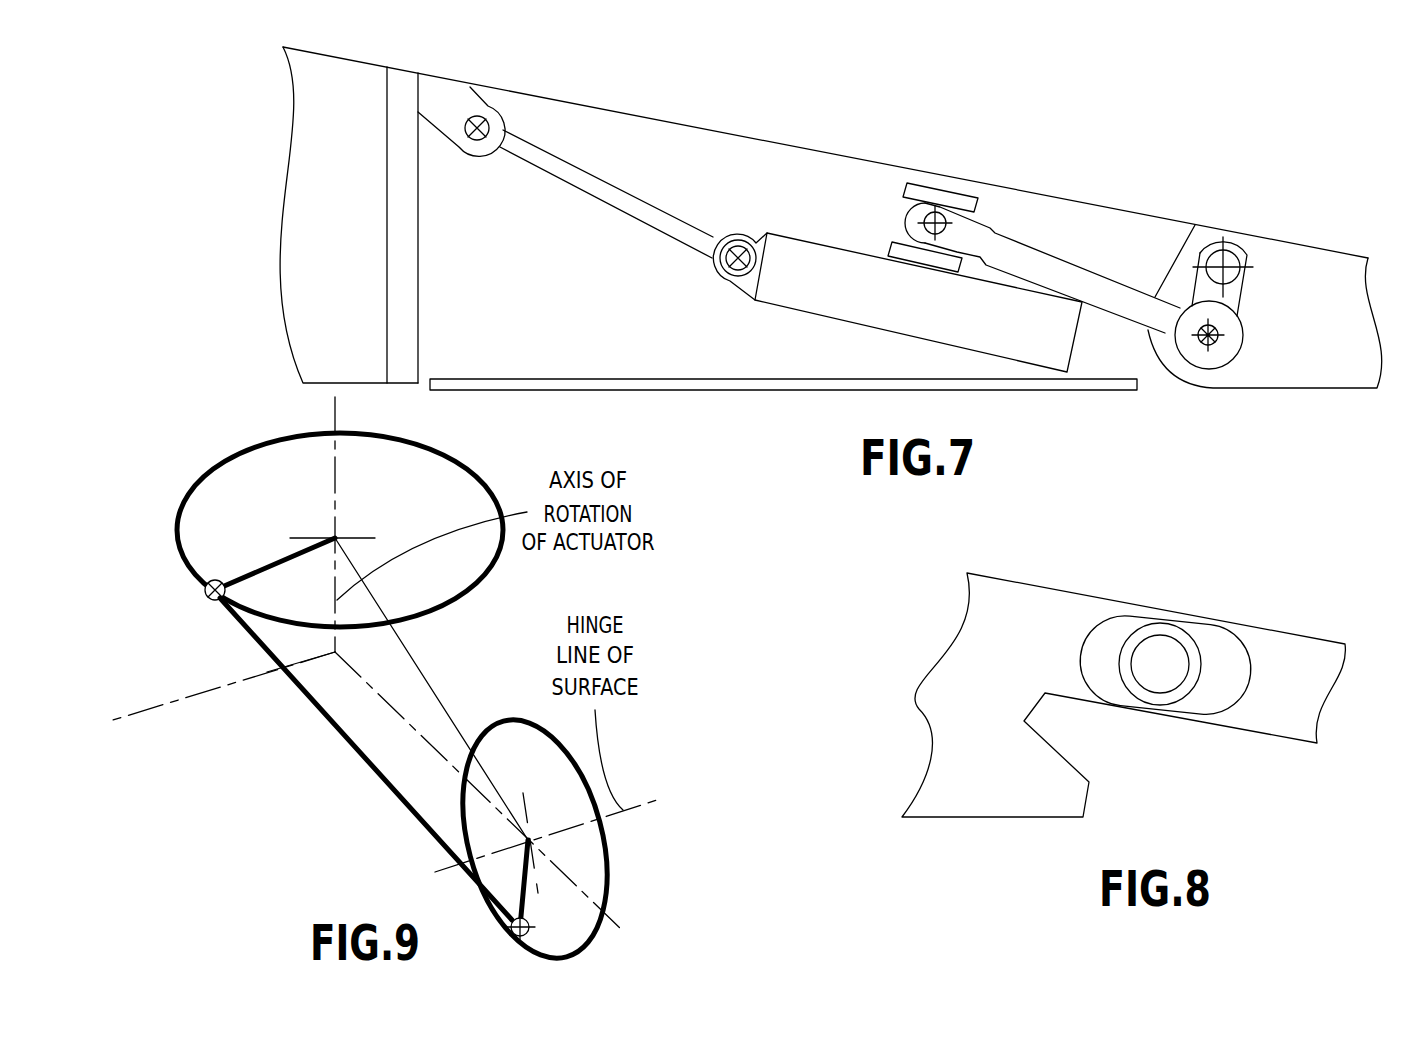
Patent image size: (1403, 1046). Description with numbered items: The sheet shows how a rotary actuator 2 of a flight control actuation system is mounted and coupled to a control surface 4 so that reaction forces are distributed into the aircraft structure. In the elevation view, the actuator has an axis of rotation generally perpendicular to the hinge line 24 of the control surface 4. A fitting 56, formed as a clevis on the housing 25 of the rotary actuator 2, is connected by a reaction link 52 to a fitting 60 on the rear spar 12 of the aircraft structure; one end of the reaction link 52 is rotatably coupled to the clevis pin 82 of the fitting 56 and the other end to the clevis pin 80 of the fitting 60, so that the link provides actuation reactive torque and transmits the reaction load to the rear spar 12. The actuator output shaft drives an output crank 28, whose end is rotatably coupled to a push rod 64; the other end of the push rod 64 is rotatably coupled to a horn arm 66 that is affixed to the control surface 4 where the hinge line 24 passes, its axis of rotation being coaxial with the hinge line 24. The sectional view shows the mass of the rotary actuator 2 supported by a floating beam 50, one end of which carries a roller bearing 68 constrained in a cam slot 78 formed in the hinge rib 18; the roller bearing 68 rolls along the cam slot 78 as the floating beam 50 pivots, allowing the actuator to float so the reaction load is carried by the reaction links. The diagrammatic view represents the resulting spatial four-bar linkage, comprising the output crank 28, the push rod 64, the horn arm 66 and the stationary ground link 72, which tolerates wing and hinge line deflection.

In FIG. 7, the rotary actuator 2 is at (890, 240).
In FIG. 7, the control surface 4 is at (1330, 246).
In FIG. 7, the rear spar 12 is at (387, 197).
In FIG. 8, the hinge rib 18 is at (1264, 638).
In FIG. 7, the hinge line 24 is at (1240, 257).
In FIG. 7, the housing 25 is at (797, 317).
In FIG. 7, the output crank 28 is at (947, 188).
In FIG. 9, the output crank 28 is at (258, 568).
In FIG. 8, the floating beam 50 is at (1148, 701).
In FIG. 7, the reaction link 52 is at (635, 197).
In FIG. 7, the fitting 56 is at (743, 232).
In FIG. 7, the fitting 60 is at (487, 100).
In FIG. 7, the push rod 64 is at (1123, 283).
In FIG. 9, the push rod 64 is at (365, 763).
In FIG. 7, the horn arm 66 is at (1247, 290).
In FIG. 9, the horn arm 66 is at (492, 901).
In FIG. 8, the roller bearing 68 is at (1199, 640).
In FIG. 9, the stationary ground link 72 is at (422, 668).
In FIG. 8, the cam slot 78 is at (1234, 701).
In FIG. 7, the clevis pin 80 is at (475, 140).
In FIG. 7, the clevis pin 82 is at (729, 280).